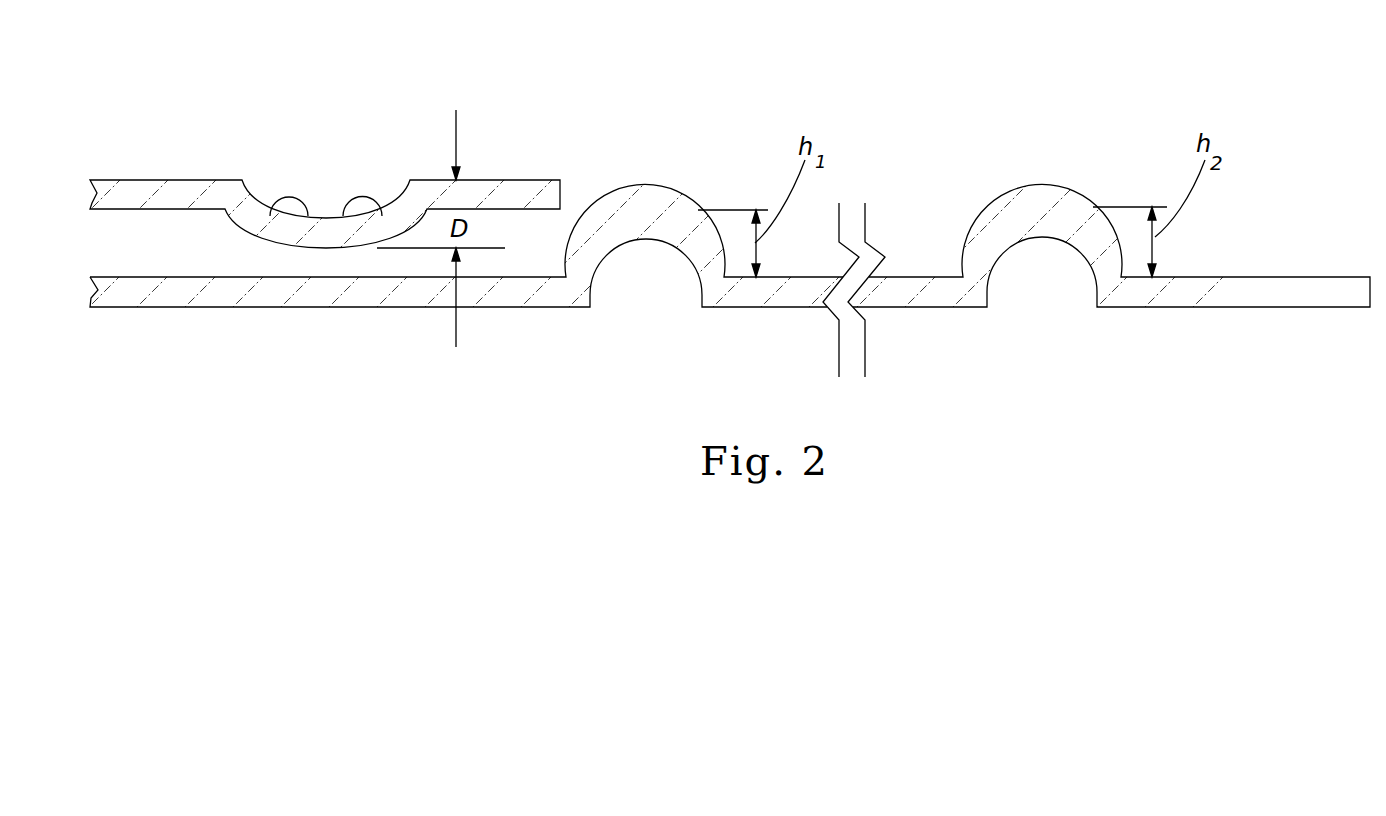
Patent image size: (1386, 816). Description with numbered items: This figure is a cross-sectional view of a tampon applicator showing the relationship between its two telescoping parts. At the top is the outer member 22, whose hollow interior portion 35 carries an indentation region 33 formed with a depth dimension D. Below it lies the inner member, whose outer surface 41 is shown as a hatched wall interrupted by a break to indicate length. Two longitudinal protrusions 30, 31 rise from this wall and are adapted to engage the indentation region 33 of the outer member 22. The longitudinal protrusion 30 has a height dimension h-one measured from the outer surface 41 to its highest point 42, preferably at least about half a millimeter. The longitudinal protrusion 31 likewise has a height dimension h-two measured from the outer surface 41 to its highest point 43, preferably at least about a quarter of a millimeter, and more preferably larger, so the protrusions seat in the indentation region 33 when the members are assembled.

The outer member 22 is at (160, 192).
The indentation region 33 is at (318, 233).
The hollow interior portion 35 is at (548, 230).
The outer surface 41 is at (810, 276).
The highest point 42 is at (646, 210).
The highest point 43 is at (1040, 207).
The longitudinal protrusion 30 is at (605, 252).
The longitudinal protrusion 31 is at (998, 237).